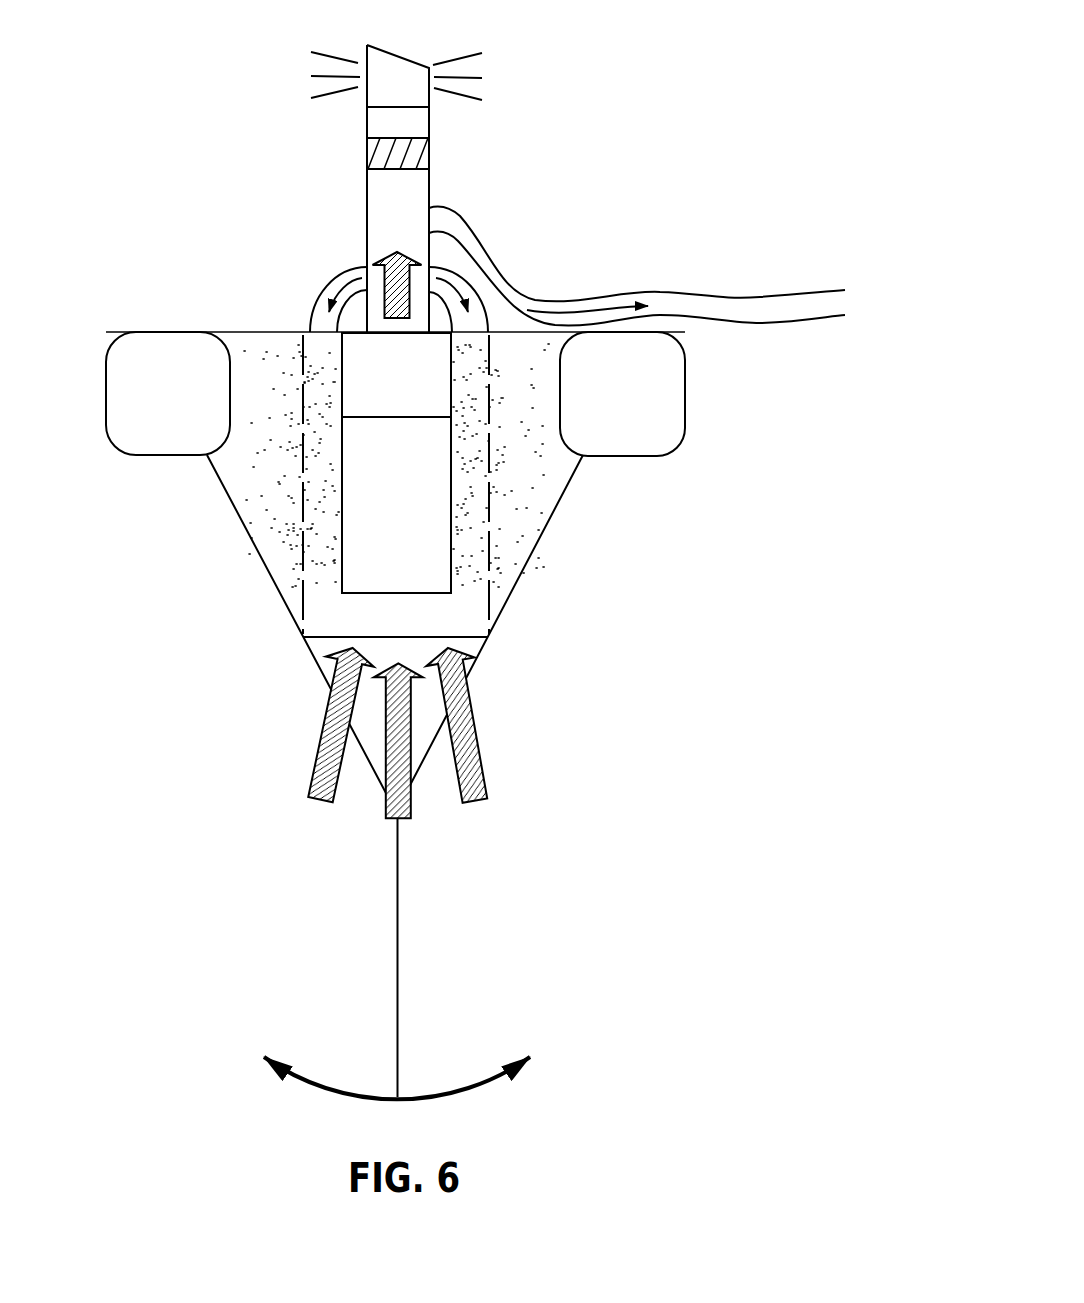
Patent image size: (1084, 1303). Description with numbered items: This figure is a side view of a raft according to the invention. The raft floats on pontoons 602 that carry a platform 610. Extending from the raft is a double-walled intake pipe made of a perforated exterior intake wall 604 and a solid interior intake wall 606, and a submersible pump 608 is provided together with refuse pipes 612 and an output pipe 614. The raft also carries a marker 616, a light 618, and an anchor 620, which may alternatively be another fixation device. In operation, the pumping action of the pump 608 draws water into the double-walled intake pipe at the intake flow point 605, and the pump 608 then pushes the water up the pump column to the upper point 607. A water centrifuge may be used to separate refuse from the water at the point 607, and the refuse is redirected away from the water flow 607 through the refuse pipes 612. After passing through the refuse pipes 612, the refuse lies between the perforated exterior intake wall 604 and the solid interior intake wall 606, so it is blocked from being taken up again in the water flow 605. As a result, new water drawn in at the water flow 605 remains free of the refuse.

The pontoons 602 is at (107, 401).
The perforated exterior intake wall 604 is at (303, 400).
The water flow into double walled intake pipe 605 is at (308, 790).
The solid interior intake wall 606 is at (450, 540).
The water flow at top of pump column 607 is at (377, 263).
The submersible pump 608 is at (396, 390).
The platform 610 is at (240, 331).
The refuse pipes 612 is at (319, 297).
The output pipe 614 is at (481, 243).
The marker 616 is at (367, 155).
The light 618 is at (305, 93).
The anchor 620 is at (280, 1080).